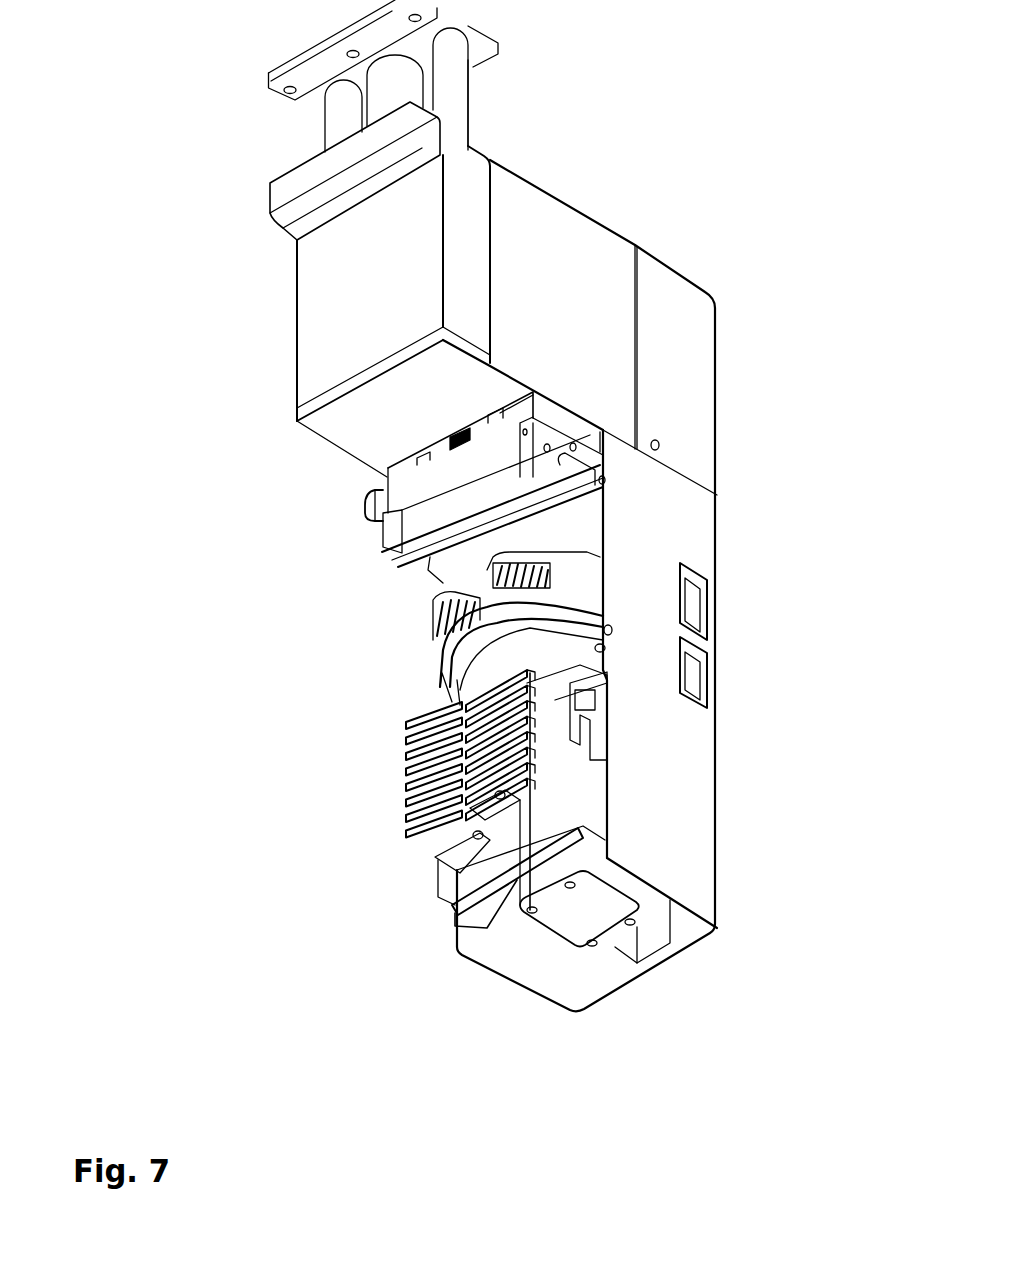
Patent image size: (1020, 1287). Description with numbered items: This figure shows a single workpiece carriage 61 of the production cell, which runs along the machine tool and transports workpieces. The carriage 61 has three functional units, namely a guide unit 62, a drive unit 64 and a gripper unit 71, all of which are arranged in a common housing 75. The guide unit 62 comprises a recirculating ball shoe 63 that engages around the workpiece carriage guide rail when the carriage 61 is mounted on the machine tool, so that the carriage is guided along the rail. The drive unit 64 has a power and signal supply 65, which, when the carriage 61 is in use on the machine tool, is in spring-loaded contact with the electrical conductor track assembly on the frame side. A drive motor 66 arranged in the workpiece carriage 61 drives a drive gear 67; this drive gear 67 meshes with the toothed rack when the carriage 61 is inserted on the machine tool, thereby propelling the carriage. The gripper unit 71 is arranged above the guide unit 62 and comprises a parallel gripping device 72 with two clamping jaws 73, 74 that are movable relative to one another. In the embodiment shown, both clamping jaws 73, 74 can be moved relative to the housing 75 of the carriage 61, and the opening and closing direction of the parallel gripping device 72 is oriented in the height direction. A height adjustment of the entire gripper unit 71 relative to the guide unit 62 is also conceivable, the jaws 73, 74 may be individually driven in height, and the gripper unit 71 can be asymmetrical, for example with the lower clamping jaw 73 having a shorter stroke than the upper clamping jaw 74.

The workpiece carriage 61 is at (720, 287).
The guide unit 62 is at (353, 520).
The recirculating ball shoe 63 is at (460, 494).
The drive unit 64 is at (413, 633).
The power and signal supply 65 is at (418, 725).
The drive motor 66 is at (583, 918).
The drive gear 67 is at (545, 573).
The gripper unit 71 is at (293, 140).
The parallel gripping device 72 is at (482, 120).
The lower clamping jaw 73 is at (288, 191).
The upper clamping jaw 74 is at (302, 57).
The housing 75 is at (675, 347).